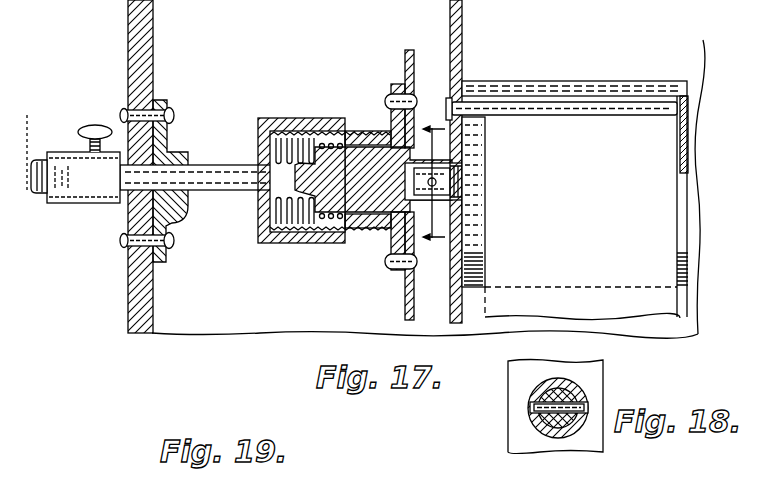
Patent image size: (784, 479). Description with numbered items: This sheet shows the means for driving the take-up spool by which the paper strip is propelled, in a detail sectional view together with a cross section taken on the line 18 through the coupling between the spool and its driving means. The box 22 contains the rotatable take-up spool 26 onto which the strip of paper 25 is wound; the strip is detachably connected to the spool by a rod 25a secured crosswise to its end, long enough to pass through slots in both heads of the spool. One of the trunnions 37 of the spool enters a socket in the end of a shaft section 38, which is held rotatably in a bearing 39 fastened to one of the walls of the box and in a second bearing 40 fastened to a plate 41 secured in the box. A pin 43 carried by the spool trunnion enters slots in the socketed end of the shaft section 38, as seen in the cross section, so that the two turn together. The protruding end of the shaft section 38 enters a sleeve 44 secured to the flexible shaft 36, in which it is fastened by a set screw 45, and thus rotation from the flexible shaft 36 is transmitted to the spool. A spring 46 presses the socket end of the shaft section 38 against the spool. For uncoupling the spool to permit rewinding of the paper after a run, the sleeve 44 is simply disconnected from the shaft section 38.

In FIG. 17, the section line 18 is at (432, 181).
In FIG. 17, the box 22 is at (128, 3).
In FIG. 17, the strip of paper 25 is at (447, 100).
In FIG. 17, the rod 25a is at (470, 106).
In FIG. 17, the take-up spool 26 is at (605, 81).
In FIG. 17, the flexible shaft 36 is at (40, 160).
In FIG. 17, the trunnion 37 is at (384, 230).
In FIG. 18, the trunnion 37 is at (552, 436).
In FIG. 17, the shaft section 38 is at (313, 244).
In FIG. 17, the bearing 39 is at (173, 153).
In FIG. 17, the second bearing 40 is at (391, 128).
In FIG. 17, the plate 41 is at (405, 52).
In FIG. 18, the plate 41 is at (517, 372).
In FIG. 18, the pin 43 is at (530, 405).
In FIG. 17, the sleeve 44 is at (92, 193).
In FIG. 17, the set screw 45 is at (92, 126).
In FIG. 17, the spring 46 is at (274, 210).